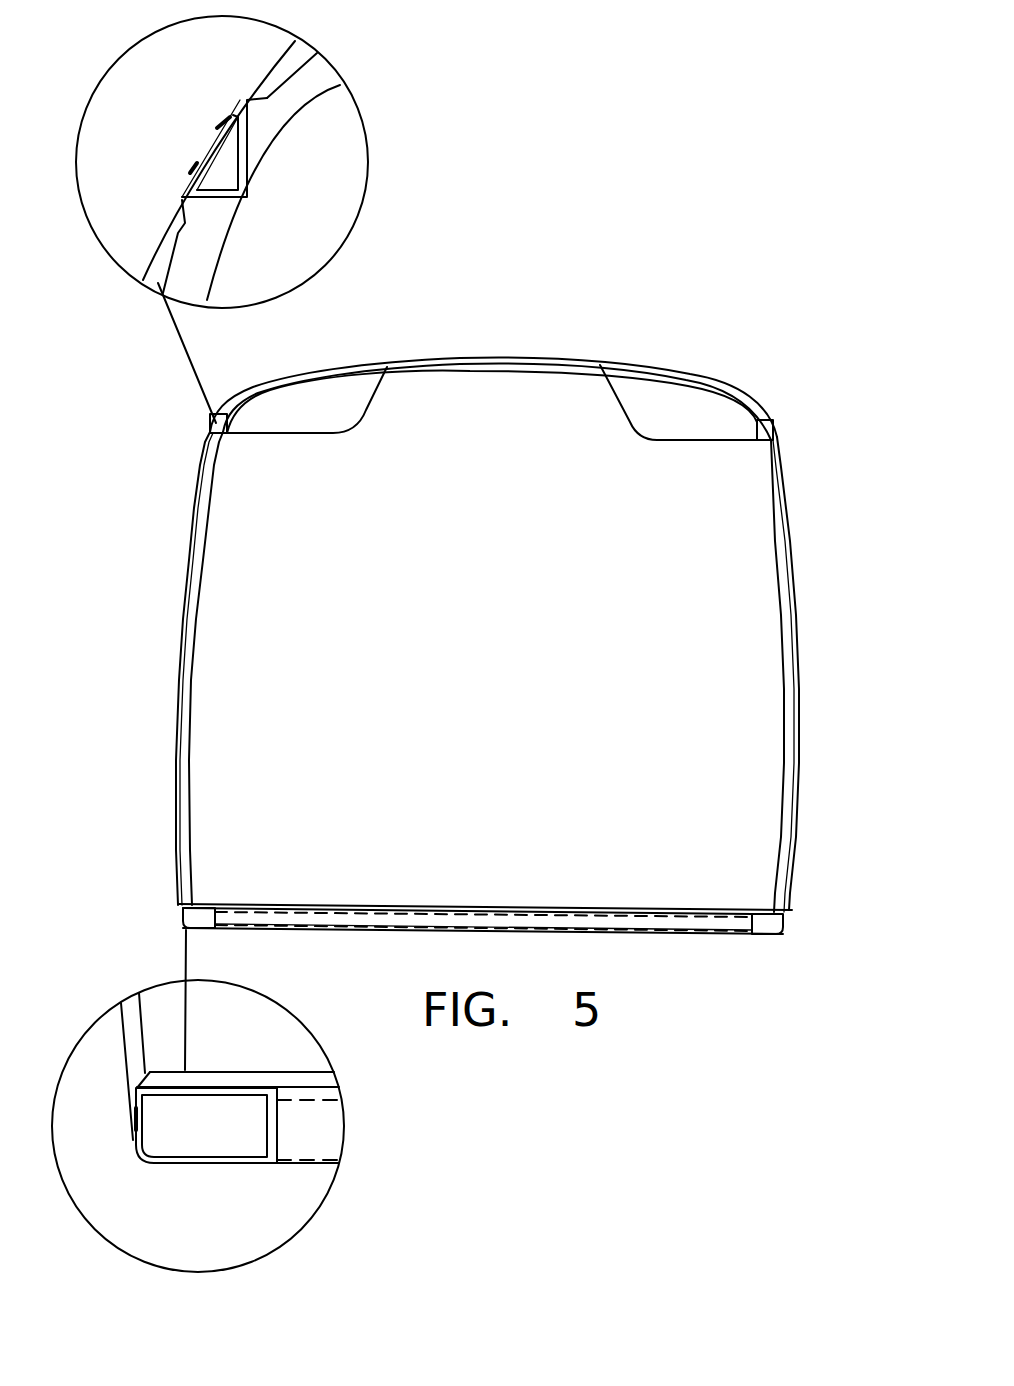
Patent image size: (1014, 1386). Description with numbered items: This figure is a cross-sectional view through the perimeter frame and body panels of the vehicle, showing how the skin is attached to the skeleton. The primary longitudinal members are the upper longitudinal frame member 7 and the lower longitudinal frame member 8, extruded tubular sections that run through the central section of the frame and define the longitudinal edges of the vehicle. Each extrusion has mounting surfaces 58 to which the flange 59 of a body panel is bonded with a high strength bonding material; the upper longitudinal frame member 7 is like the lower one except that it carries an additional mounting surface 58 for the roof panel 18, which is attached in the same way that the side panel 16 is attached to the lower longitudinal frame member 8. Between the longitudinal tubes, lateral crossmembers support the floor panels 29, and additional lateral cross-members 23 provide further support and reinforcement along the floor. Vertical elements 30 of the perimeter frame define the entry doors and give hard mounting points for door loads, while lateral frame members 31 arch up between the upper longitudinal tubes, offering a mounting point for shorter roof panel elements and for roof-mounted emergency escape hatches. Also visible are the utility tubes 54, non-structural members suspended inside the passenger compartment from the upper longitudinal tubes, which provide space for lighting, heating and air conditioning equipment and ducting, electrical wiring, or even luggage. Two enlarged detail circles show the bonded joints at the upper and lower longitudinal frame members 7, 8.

The upper longitudinal frame member 7 is at (775, 432).
The lower longitudinal frame member 8 is at (769, 935).
The side panel 16 is at (182, 602).
The roof panel 18 is at (598, 362).
The additional lateral cross-members 23 is at (332, 923).
The floor panels 29 is at (440, 902).
The vertical elements 30 is at (193, 684).
The lateral frame members 31 is at (457, 368).
The utility tubes 54 is at (338, 437).
The mounting surfaces 58 is at (238, 118).
The flange 59 is at (223, 110).